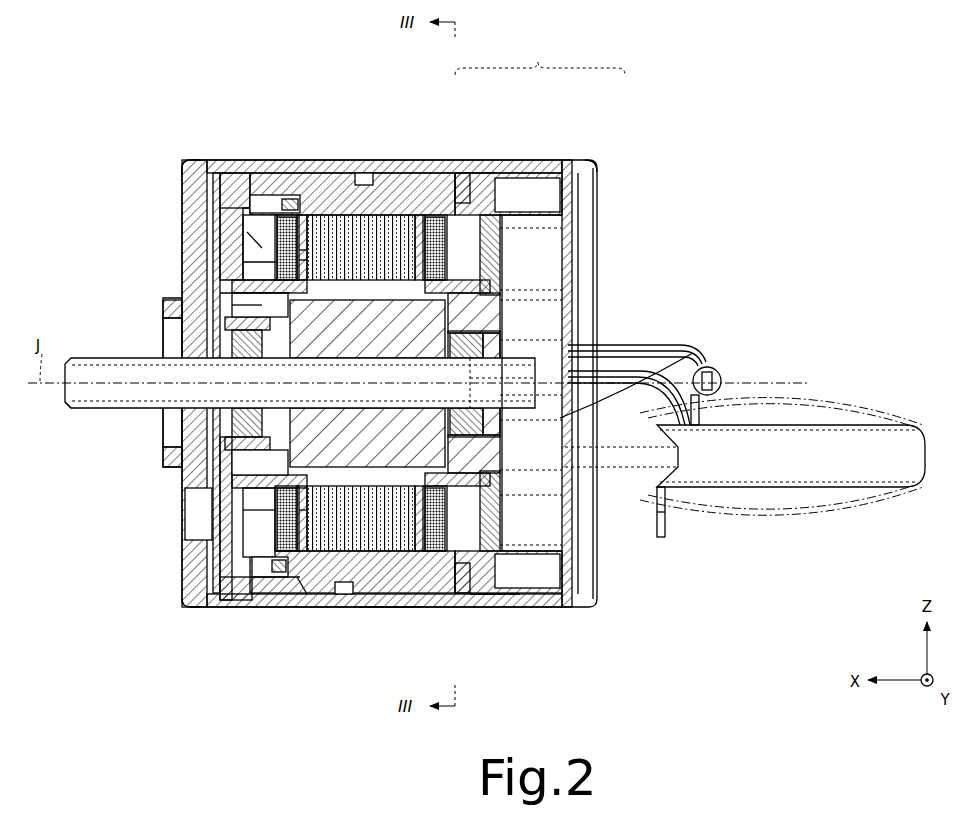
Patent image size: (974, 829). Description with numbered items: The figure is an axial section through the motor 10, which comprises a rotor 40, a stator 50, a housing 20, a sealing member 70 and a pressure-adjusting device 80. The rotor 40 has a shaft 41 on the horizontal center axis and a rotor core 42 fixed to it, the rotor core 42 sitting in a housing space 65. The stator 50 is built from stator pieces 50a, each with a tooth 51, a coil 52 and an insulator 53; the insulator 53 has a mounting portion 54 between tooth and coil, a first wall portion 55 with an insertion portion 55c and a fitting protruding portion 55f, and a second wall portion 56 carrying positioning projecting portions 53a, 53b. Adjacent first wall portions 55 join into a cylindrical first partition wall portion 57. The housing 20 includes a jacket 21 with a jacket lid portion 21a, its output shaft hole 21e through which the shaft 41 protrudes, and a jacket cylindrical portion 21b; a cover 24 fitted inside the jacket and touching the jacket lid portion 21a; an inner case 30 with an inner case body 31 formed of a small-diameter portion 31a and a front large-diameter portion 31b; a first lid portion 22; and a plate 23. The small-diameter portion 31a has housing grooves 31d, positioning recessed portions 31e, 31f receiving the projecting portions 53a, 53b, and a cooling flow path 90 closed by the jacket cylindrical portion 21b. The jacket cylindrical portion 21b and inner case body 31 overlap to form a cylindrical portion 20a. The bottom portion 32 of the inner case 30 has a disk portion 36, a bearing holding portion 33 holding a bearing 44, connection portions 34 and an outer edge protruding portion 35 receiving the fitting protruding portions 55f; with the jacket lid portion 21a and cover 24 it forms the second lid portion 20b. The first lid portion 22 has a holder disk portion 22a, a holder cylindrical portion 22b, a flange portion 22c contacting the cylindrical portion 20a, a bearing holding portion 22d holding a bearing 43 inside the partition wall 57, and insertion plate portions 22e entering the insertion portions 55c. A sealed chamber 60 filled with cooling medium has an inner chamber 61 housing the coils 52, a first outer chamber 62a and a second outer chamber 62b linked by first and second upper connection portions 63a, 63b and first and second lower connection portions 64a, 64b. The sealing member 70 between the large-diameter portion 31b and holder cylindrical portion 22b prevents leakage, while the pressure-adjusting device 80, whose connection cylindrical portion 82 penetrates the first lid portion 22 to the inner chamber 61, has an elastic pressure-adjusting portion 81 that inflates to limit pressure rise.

The motor 10 is at (748, 106).
The housing 20 is at (540, 59).
The cylindrical portion 20a is at (380, 625).
The second lid portion 20b is at (178, 622).
The jacket 21 is at (460, 160).
The jacket lid portion 21a is at (240, 240).
The jacket cylindrical portion 21b is at (460, 185).
The output shaft hole 21e is at (95, 412).
The first lid portion 22 is at (567, 160).
The holder disk portion 22a is at (575, 300).
The holder cylindrical portion 22b is at (570, 228).
The flange portion 22c is at (597, 172).
The bearing holding portion 22d is at (565, 342).
The insertion plate portion 22e is at (578, 290).
The plate 23 is at (590, 160).
The cover 24 is at (213, 605).
The inner case 30 is at (505, 160).
The inner case body 31 is at (520, 595).
The small-diameter portion 31a is at (380, 604).
The large-diameter portion 31b is at (500, 607).
The housing groove 31d is at (262, 212).
The positioning recessed portion 31e is at (372, 173).
The positioning recessed portion 31f is at (490, 173).
The bottom portion 32 is at (182, 468).
The bearing holding portion 33 is at (232, 415).
The connection portion 34 is at (225, 258).
The outer edge protruding portion 35 is at (240, 272).
The disk portion 36 is at (232, 492).
The rotor 40 is at (100, 418).
The shaft 41 is at (80, 358).
The rotor core 42 is at (200, 318).
The bearing 43 is at (693, 353).
The bearing 44 is at (205, 473).
The stator 50 is at (474, 384).
The stator piece 50a is at (492, 252).
The tooth 51 is at (318, 175).
The coil 52 is at (240, 572).
The insulator 53 is at (498, 268).
The positioning projecting portion 53a is at (345, 212).
The positioning projecting portion 53b is at (563, 190).
The mounting portion 54 is at (303, 603).
The first wall portion 55 is at (222, 305).
The insertion portion 55c is at (498, 298).
The fitting protruding portion 55f is at (212, 292).
The second wall portion 56 is at (297, 195).
The first partition wall portion 57 is at (255, 507).
The sealed chamber 60 is at (205, 198).
The inner chamber 61 is at (194, 160).
The first outer chamber 62a is at (433, 217).
The second outer chamber 62b is at (287, 215).
The first upper connection portion 63a is at (443, 217).
The second upper connection portion 63b is at (278, 225).
The first lower connection portion 64a is at (458, 537).
The second lower connection portion 64b is at (272, 548).
The housing space 65 is at (272, 607).
The sealing member 70 is at (530, 588).
The pressure-adjusting device 80 is at (926, 490).
The pressure-adjusting portion 81 is at (862, 498).
The connection cylindrical portion 82 is at (588, 473).
The cooling flow path 90 is at (342, 605).